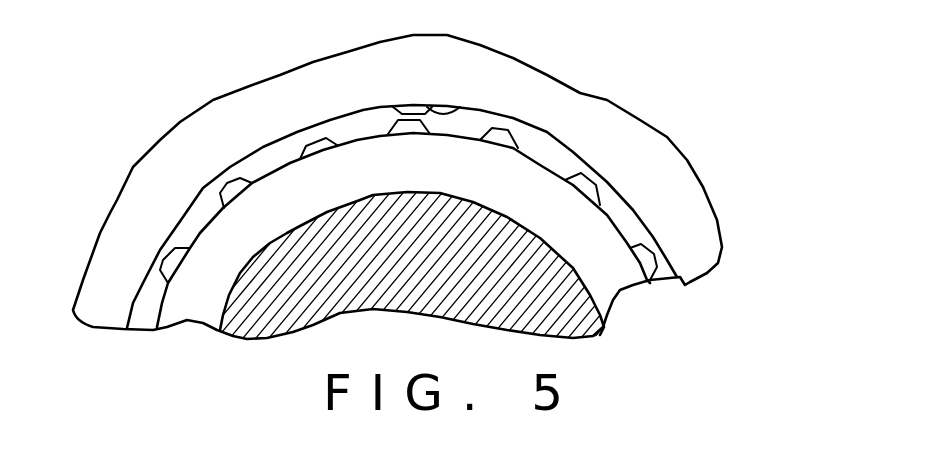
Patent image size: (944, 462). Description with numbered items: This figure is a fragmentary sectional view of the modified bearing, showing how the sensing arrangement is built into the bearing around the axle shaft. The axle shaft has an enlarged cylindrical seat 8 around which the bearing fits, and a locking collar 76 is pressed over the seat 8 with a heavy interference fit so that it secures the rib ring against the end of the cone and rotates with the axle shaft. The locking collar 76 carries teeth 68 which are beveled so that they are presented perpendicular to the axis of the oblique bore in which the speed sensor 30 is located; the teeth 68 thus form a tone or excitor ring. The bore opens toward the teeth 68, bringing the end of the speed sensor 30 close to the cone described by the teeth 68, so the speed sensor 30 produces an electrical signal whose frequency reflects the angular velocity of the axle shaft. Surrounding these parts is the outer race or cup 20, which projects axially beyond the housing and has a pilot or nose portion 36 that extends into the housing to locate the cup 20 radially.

The cup 20 is at (692, 163).
The pilot or nose portion 36 is at (542, 102).
The teeth 68 is at (232, 187).
The speed sensor 30 is at (458, 108).
The locking collar 76 is at (612, 275).
The seat 8 is at (267, 315).